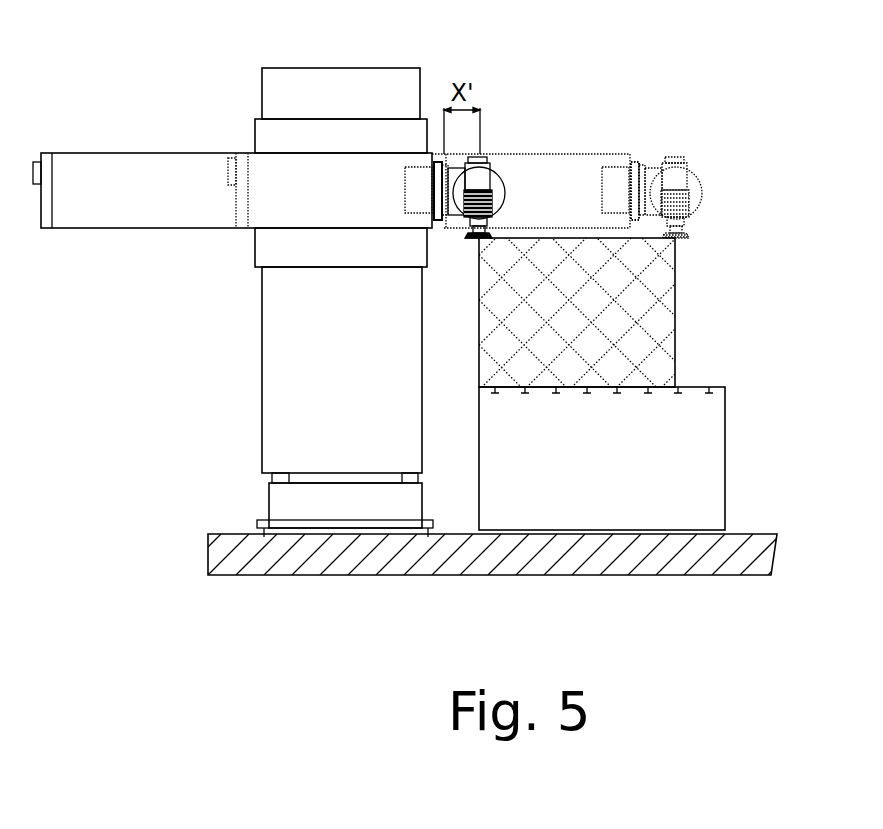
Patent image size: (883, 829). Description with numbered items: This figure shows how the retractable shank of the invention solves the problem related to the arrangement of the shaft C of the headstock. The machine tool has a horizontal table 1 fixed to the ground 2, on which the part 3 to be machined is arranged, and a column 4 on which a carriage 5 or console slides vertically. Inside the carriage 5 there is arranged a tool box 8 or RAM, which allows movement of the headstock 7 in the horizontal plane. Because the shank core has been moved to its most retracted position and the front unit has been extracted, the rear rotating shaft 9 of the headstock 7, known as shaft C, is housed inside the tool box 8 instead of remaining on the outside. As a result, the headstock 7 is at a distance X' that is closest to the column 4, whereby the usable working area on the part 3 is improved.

The horizontal table 1 is at (675, 463).
The ground 2 is at (760, 557).
The part 3 is at (614, 317).
The column 4 is at (335, 366).
The carriage 5 is at (330, 97).
The headstock 7 is at (675, 178).
The tool box 8 is at (322, 191).
The rear rotating shaft 9 is at (614, 185).